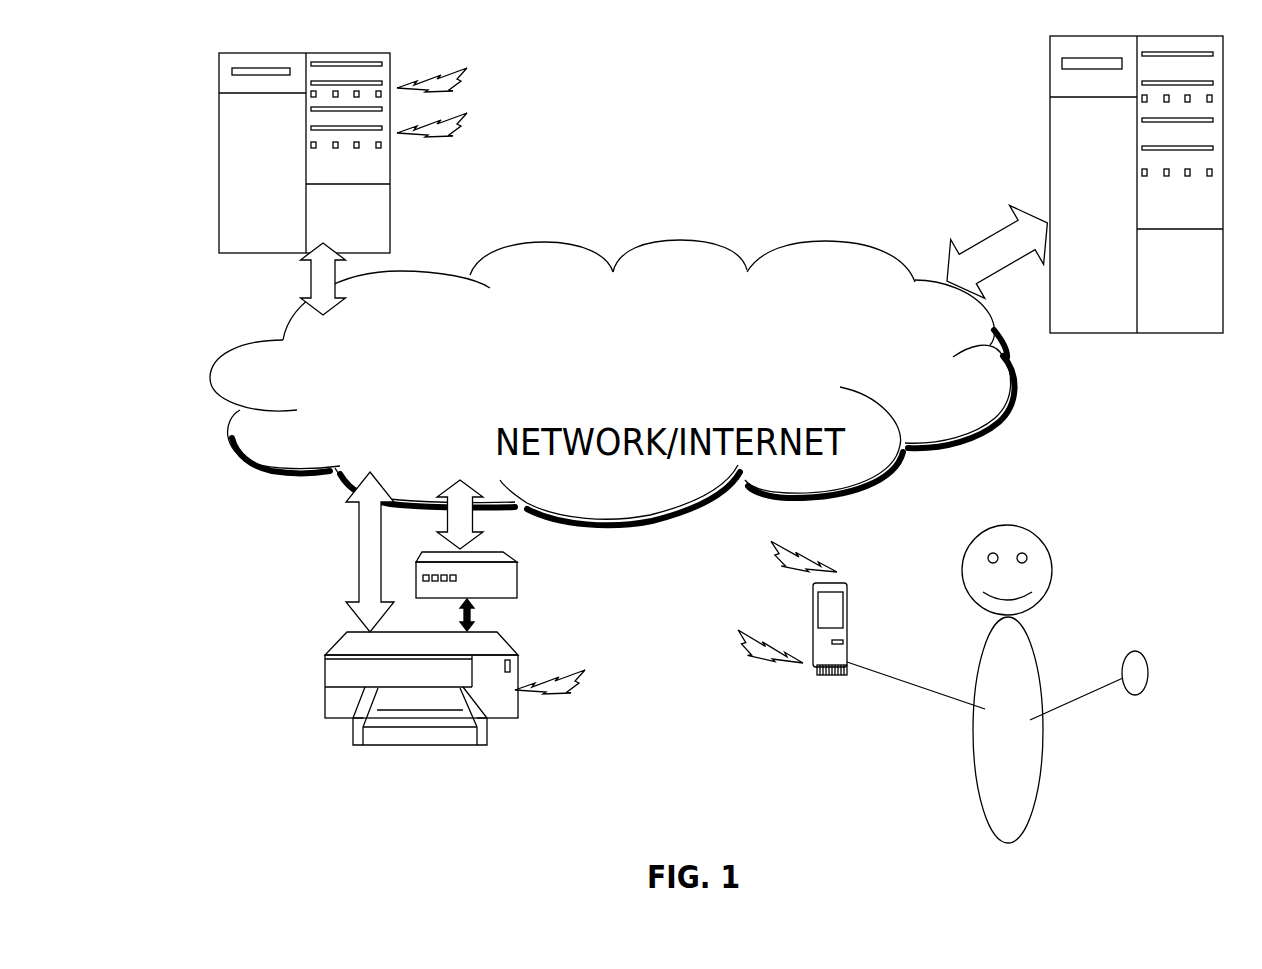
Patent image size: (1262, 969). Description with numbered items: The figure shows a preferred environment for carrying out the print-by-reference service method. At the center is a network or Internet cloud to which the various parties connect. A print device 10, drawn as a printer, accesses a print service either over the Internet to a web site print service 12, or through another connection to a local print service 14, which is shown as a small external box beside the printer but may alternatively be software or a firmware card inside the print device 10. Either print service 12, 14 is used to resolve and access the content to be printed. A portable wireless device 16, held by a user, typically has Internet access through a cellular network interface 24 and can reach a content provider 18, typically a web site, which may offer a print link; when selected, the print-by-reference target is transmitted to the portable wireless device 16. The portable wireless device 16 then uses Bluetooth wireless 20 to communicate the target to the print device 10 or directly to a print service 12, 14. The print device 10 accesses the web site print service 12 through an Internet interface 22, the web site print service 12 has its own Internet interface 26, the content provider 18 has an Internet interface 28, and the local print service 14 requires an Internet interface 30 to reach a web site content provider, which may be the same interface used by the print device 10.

The print device 10 is at (325, 688).
The web site print service 12 is at (390, 152).
The local print service 14 is at (517, 578).
The portable wireless device 16 is at (833, 675).
The content provider 18 is at (1050, 183).
The Bluetooth wireless 20 is at (467, 68).
The Internet interface 22 is at (360, 553).
The cellular network interface 24 is at (468, 130).
The Internet interface 26 is at (312, 258).
The Internet interface 28 is at (987, 234).
The Internet interface 30 is at (473, 515).